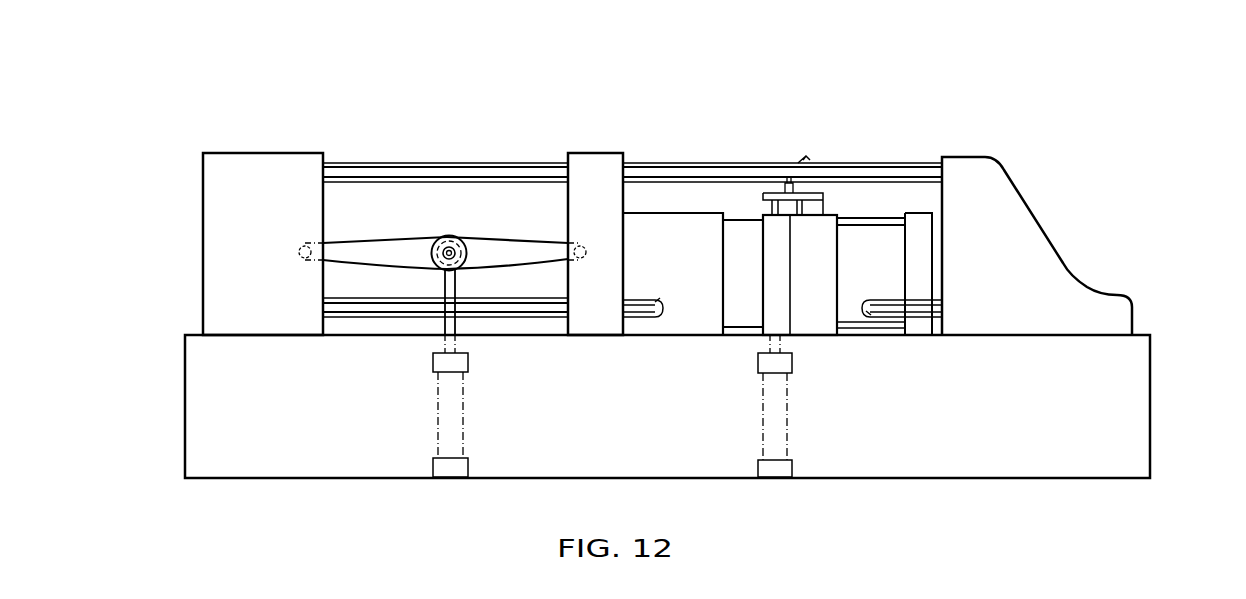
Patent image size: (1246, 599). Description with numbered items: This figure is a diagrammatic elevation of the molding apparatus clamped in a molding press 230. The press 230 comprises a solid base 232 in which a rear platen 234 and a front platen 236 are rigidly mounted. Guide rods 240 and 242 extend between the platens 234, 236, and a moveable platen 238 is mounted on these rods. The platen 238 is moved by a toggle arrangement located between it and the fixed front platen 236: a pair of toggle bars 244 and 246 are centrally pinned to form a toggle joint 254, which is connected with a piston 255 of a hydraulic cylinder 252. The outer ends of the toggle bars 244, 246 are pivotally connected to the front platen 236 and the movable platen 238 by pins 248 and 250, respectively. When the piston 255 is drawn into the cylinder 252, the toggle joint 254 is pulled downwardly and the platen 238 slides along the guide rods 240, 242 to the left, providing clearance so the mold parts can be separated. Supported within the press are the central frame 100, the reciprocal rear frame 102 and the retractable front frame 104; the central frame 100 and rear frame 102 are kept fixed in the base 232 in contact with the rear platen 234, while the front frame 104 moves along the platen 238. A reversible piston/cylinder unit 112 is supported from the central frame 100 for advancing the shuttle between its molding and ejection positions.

The central frame 100 is at (806, 344).
The reciprocal rear frame 102 is at (856, 203).
The retractable front frame 104 is at (693, 205).
The reversible piston/cylinder unit 112 is at (787, 407).
The molding press 230 is at (784, 122).
The base 232 is at (1140, 405).
The rear platen 234 is at (1022, 212).
The front platen 236 is at (272, 160).
The moveable platen 238 is at (597, 160).
The guide rod 240 is at (447, 170).
The guide rod 242 is at (362, 303).
The toggle bar 244 is at (368, 247).
The toggle bar 246 is at (520, 245).
The pin 248 is at (303, 247).
The pin 250 is at (582, 247).
The hydraulic cylinder 252 is at (463, 382).
The toggle joint 254 is at (470, 220).
The piston 255 is at (457, 287).